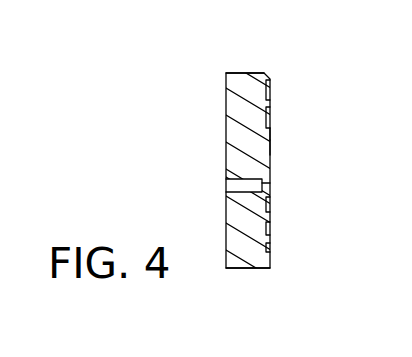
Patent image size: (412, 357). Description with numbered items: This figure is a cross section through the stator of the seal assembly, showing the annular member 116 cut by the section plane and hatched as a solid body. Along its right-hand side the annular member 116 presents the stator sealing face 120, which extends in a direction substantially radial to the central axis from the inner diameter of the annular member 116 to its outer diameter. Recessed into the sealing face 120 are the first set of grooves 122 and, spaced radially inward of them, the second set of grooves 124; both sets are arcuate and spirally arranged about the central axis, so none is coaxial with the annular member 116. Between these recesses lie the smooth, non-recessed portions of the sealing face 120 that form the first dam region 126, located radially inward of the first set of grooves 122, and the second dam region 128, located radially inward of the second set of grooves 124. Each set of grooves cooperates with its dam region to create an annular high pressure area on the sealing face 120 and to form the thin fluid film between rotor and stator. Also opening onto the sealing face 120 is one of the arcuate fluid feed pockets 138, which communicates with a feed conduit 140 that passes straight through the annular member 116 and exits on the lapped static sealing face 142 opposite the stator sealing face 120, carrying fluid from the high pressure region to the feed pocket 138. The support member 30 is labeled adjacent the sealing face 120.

The support member 30 is at (270, 147).
The annular member 116 is at (245, 73).
The stator sealing face 120 is at (270, 268).
The first set of grooves 122 is at (270, 115).
The second set of grooves 124 is at (270, 202).
The first dam region 126 is at (270, 133).
The second dam region 128 is at (270, 255).
The fluid feed pockets 138 is at (270, 181).
The feed conduit 140 is at (227, 183).
The lapped static sealing face 142 is at (227, 128).